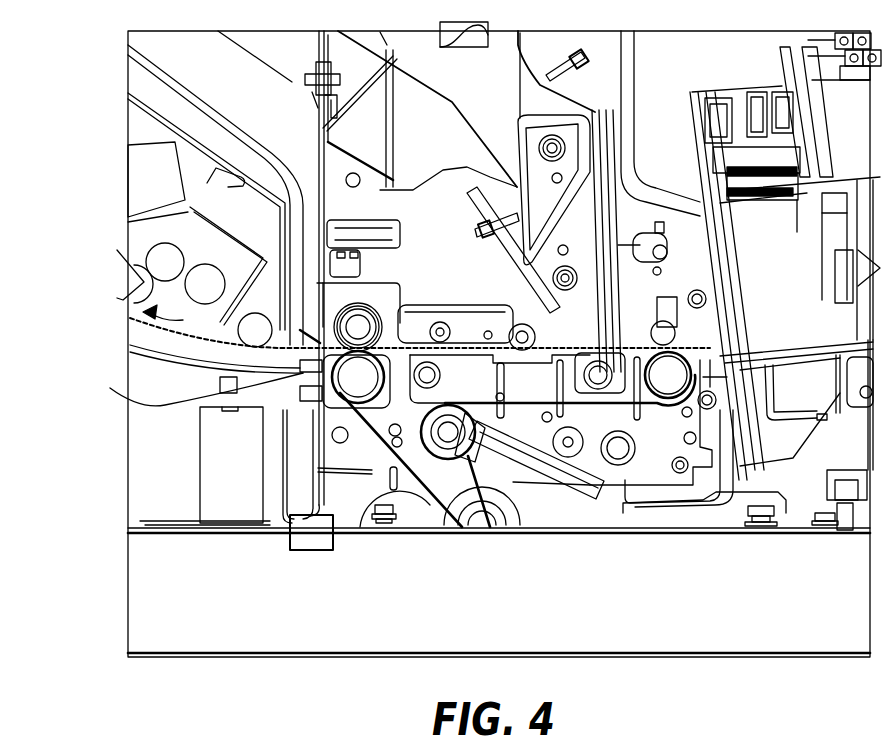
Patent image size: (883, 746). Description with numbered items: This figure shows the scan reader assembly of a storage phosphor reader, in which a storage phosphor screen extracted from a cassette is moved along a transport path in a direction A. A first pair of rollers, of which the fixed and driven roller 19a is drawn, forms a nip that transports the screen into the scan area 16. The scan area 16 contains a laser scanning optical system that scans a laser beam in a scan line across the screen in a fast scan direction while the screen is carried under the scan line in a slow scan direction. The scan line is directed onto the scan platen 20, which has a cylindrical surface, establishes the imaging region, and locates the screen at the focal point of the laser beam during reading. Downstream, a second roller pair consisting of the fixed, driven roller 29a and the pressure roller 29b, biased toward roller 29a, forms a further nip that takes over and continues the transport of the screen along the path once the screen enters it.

The direction A is at (143, 293).
The scan area 16 is at (452, 563).
The drive roller 19a is at (673, 368).
The scan platen 20 is at (600, 378).
The drive roller 29a is at (356, 377).
The pressure roller 29b is at (377, 295).